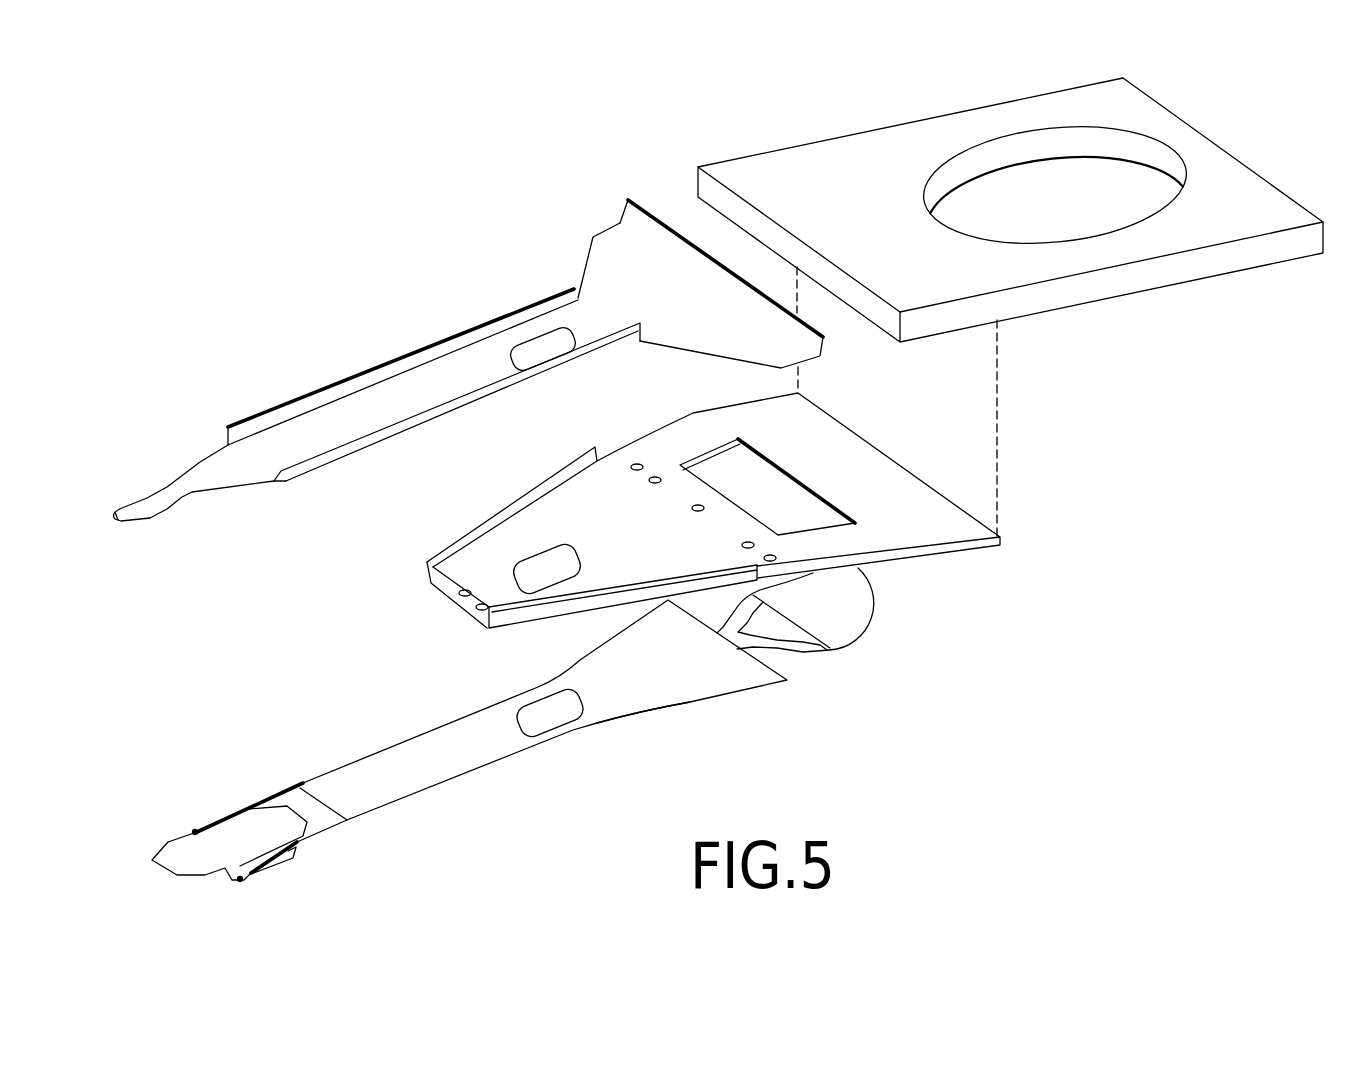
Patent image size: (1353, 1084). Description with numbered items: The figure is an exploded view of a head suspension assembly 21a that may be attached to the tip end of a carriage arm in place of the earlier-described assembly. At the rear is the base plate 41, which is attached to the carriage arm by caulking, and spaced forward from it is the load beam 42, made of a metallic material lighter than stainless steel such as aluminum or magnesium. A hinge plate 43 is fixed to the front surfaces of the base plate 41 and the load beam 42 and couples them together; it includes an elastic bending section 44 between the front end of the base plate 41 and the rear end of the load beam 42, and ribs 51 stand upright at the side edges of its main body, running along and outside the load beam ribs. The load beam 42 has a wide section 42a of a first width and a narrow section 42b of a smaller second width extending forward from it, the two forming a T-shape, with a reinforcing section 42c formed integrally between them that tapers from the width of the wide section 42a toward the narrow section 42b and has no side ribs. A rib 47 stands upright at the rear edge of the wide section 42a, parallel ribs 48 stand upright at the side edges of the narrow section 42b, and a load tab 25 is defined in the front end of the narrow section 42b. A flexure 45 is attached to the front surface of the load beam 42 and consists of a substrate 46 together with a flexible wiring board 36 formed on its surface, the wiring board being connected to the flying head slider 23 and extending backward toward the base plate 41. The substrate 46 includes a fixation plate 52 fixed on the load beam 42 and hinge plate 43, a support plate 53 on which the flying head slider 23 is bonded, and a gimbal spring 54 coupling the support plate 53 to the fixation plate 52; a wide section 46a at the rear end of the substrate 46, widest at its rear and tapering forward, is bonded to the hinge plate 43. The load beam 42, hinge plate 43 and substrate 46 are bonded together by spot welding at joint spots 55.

The head suspension assembly 21a is at (437, 210).
The base plate 41 is at (1258, 190).
The load beam 42 is at (461, 358).
The wide section 42a is at (612, 233).
The narrow section 42b is at (297, 427).
The reinforcing section 42c is at (590, 283).
The rib 47 is at (627, 200).
The ribs 48 is at (450, 367).
The load tab 25 is at (127, 523).
The hinge plate 43 is at (698, 518).
The elastic bending section 44 is at (690, 518).
The ribs 51 is at (465, 535).
The joint spots 55 is at (618, 531).
The flexible wiring board 36 is at (802, 648).
The flexure 45 is at (458, 763).
The substrate 46 is at (542, 726).
The wide section 46a is at (663, 703).
The fixation plate 52 is at (342, 775).
The support plate 53 is at (243, 830).
The gimbal spring 54 is at (193, 831).
The flying head slider 23 is at (281, 861).